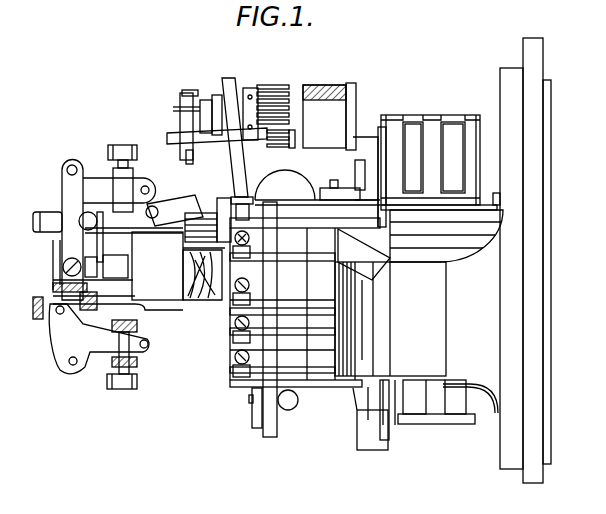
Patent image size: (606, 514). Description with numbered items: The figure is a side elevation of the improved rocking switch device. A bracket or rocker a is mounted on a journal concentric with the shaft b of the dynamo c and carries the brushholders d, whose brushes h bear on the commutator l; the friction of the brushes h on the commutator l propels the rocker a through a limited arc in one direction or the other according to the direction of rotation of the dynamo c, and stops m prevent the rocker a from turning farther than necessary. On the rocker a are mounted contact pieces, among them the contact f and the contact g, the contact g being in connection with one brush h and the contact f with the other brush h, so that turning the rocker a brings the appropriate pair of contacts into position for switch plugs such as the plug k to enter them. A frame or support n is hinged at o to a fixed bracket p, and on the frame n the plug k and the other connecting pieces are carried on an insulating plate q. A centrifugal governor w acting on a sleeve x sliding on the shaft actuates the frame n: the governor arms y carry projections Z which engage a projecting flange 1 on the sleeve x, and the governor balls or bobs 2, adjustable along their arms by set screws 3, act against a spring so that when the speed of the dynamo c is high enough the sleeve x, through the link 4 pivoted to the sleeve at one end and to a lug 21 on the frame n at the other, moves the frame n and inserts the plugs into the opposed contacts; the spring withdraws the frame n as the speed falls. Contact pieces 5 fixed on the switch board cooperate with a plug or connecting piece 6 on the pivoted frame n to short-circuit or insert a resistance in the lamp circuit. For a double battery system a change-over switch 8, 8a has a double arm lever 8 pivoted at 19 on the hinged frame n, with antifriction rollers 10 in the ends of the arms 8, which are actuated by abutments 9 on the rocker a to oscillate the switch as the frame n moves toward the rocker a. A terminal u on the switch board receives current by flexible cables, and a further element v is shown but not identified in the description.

The dynamo c is at (546, 238).
The brushholders d is at (473, 120).
The brush h is at (434, 266).
The commutator l is at (419, 293).
The bracket or rocker a is at (368, 133).
The stops m is at (330, 180).
The contact piece f is at (323, 100).
The contact piece g is at (336, 100).
The switch plug or blade k is at (252, 90).
The antifriction rollers 10 is at (275, 142).
The abutments 9 is at (290, 138).
The insulating plate q is at (228, 60).
The double arm lever 8 is at (220, 146).
The change-over switch 8a is at (172, 114).
The pivot 19 is at (190, 160).
The frame or support n is at (310, 224).
The lug 21 is at (228, 198).
The plug or connecting piece 6 is at (200, 187).
The contact pieces 5 is at (204, 274).
The vertical bar v is at (268, 436).
The terminal u is at (252, 420).
The hinge o is at (305, 392).
The fixed bracket p is at (305, 388).
The sleeve x is at (170, 302).
The governor arms y is at (110, 247).
The set screws 3 is at (128, 145).
The governor balls or bobs 2 is at (133, 173).
The link 4 is at (177, 207).
The shaft b is at (55, 285).
The projections Z is at (115, 267).
The centrifugal governor w is at (60, 349).
The projecting flange 1 is at (107, 300).